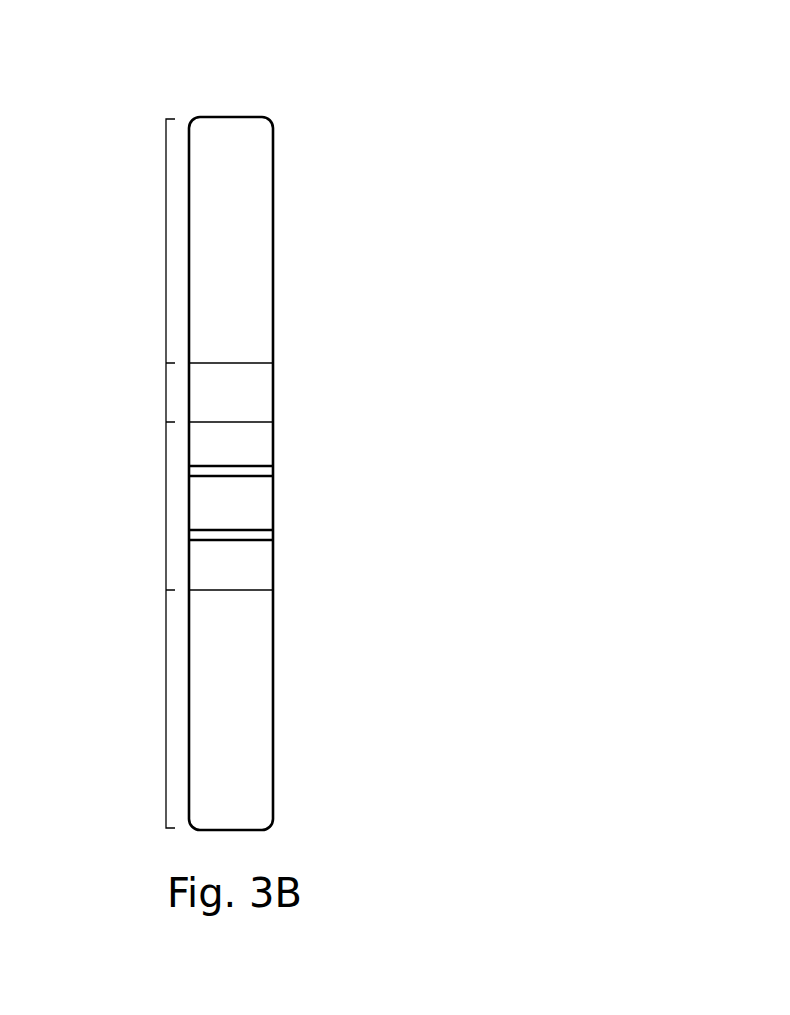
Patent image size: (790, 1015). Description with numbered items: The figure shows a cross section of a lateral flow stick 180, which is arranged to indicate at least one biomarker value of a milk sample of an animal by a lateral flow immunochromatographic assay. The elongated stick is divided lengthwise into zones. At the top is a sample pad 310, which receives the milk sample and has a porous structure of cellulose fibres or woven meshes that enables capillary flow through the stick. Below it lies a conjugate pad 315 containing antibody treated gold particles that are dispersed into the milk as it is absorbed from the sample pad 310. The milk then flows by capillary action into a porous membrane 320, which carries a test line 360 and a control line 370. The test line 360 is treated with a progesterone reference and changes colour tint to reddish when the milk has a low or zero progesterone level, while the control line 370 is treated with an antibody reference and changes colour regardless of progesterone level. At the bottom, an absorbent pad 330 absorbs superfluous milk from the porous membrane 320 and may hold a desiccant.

The lateral flow stick 180 is at (578, 97).
The sample pad 310 is at (166, 242).
The conjugate pad 315 is at (166, 395).
The porous membrane 320 is at (166, 507).
The absorbent pad 330 is at (166, 712).
The test line 360 is at (243, 470).
The control line 370 is at (243, 536).